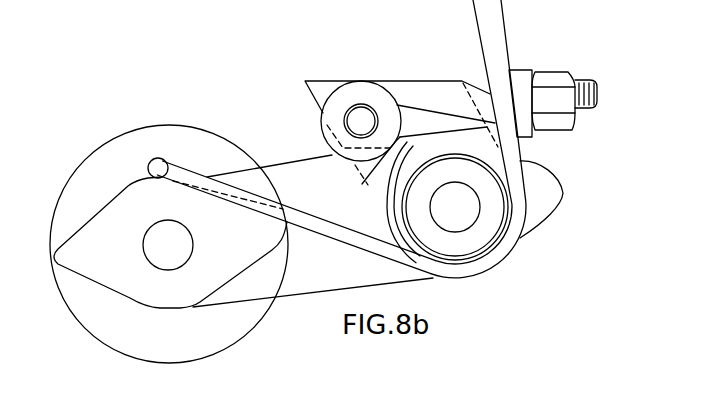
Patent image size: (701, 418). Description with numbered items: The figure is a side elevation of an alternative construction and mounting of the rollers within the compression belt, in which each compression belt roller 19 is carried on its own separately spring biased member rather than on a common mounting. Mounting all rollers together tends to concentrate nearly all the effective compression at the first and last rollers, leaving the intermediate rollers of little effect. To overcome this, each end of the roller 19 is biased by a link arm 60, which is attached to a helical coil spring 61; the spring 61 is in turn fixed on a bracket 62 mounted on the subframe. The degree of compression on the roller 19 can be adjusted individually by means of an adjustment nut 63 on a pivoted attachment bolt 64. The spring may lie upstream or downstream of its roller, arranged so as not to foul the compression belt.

The compression belt roller 19 is at (202, 128).
The link arm 60 is at (299, 206).
The helical coil spring 61 is at (388, 203).
The bracket 62 is at (408, 93).
The adjustment nut 63 is at (547, 70).
The pivoted attachment bolt 64 is at (445, 113).